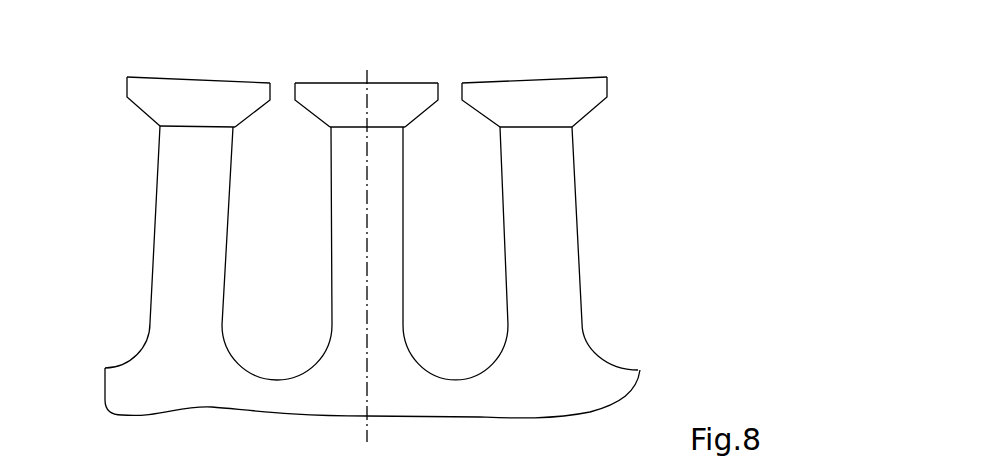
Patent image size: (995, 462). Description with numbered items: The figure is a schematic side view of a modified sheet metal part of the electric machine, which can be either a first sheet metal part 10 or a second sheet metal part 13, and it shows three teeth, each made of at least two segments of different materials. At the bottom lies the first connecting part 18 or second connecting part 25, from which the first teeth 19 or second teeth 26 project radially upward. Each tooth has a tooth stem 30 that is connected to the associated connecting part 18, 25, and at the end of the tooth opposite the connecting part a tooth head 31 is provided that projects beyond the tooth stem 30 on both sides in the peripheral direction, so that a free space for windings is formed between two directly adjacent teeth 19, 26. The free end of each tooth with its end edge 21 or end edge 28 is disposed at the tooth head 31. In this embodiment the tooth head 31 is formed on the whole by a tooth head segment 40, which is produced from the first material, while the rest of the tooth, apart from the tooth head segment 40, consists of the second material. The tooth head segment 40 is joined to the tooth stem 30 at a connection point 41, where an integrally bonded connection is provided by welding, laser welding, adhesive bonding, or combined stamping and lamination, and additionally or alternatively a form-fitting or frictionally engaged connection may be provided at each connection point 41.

The first sheet metal part 10 is at (370, 227).
The second sheet metal part 13 is at (615, 62).
The first connecting part 18 is at (337, 378).
The second connecting part 25 is at (157, 372).
The first tooth 19 is at (370, 253).
The second tooth 26 is at (147, 243).
The end edge 21 is at (367, 47).
The end edge 28 is at (177, 75).
The tooth stem 30 is at (178, 192).
The tooth head 31 is at (143, 111).
The tooth head segment 40 is at (140, 87).
The connection point 41 is at (330, 128).